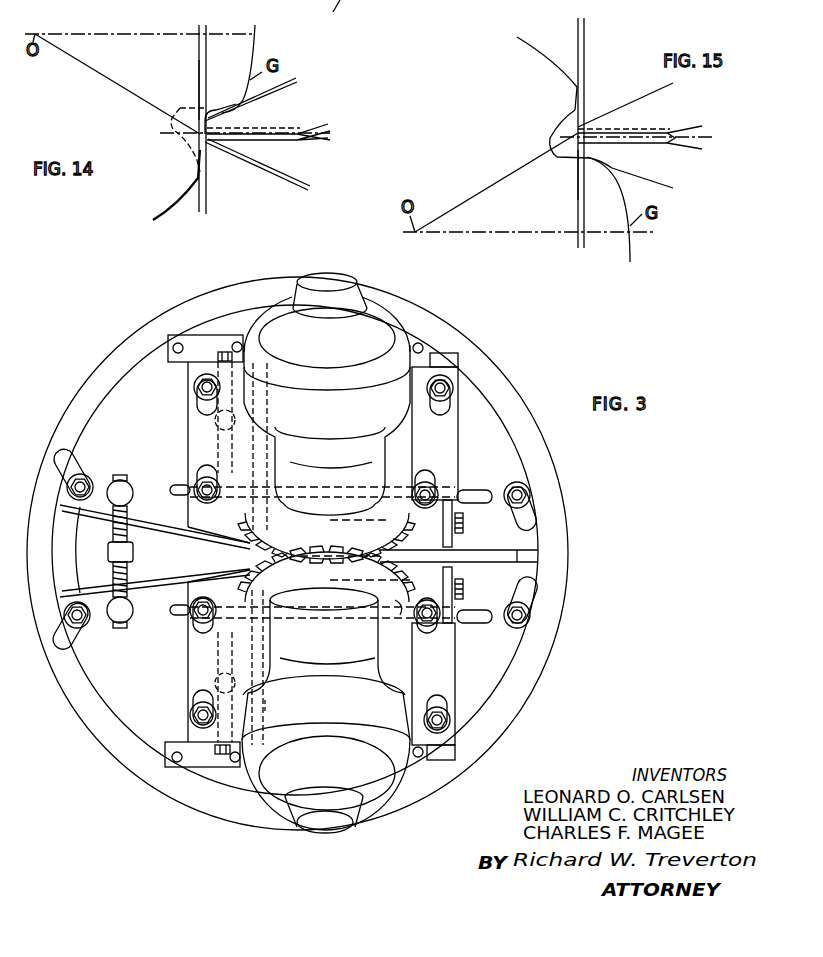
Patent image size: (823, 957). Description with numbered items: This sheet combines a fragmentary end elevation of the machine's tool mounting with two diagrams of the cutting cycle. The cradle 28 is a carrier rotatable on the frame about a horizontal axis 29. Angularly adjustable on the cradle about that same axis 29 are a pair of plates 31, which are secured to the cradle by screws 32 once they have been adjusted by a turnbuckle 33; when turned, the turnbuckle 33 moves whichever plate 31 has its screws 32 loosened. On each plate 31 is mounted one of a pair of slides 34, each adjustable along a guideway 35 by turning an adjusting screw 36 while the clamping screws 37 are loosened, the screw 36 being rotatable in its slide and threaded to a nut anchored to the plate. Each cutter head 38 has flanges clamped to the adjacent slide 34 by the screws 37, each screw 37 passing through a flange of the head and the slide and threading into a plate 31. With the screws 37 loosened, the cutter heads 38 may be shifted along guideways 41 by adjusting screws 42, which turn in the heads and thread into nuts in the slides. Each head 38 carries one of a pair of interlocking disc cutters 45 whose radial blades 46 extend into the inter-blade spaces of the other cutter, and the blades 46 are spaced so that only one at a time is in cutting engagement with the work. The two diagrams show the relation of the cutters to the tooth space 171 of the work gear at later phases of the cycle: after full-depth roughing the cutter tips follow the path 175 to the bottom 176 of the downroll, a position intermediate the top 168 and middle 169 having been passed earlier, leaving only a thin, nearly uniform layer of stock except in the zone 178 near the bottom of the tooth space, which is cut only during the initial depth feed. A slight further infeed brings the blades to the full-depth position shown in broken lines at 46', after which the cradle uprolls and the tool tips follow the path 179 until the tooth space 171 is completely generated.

In FIG. 3, the cradle 28 is at (96, 386).
In FIG. 3, the horizontal axis 29 is at (281, 558).
In FIG. 3, the plates 31 is at (257, 553).
In FIG. 3, the screws 32 is at (529, 500).
In FIG. 3, the turnbuckle 33 is at (108, 545).
In FIG. 3, the slides 34 is at (447, 357).
In FIG. 3, the guideway 35 is at (197, 343).
In FIG. 3, the adjusting screw 36 is at (464, 527).
In FIG. 3, the clamping screws 37 is at (432, 399).
In FIG. 3, the cutter head 38 is at (332, 553).
In FIG. 3, the guideways 41 is at (265, 700).
In FIG. 3, the adjusting screws 42 is at (223, 352).
In FIG. 3, the interlocking disc cutters 45 is at (294, 590).
In FIG. 14, the cutter blades 46 is at (267, 157).
In FIG. 3, the cutter blades 46 is at (399, 625).
In FIG. 14, the broken-line position of cutter blades 46' is at (208, 148).
In FIG. 15, the top of the downroll 168 is at (622, 130).
In FIG. 14, the middle of the downroll 169 is at (140, 35).
In FIG. 15, the middle of the downroll 169 is at (468, 232).
In FIG. 14, the tooth space 171 is at (214, 110).
In FIG. 15, the tooth space 171 is at (571, 112).
In FIG. 14, the path 175 is at (206, 52).
In FIG. 15, the path 175 is at (587, 97).
In FIG. 14, the bottom of the downroll 176 is at (263, 130).
In FIG. 14, the zone 178 is at (195, 178).
In FIG. 14, the path 179 is at (198, 76).
In FIG. 15, the path 179 is at (575, 181).